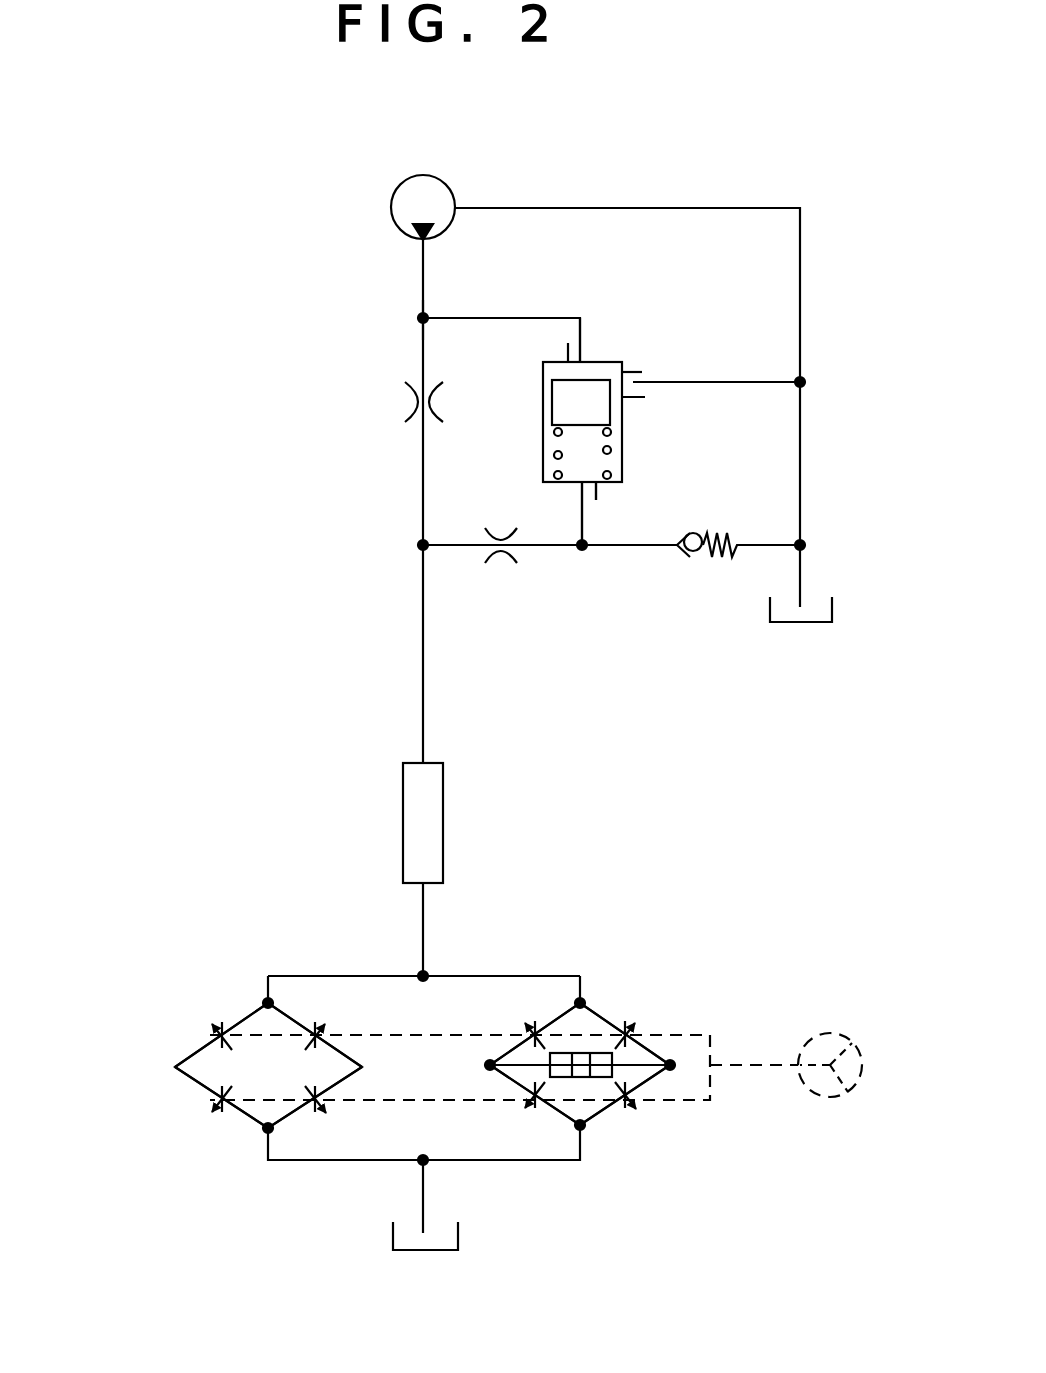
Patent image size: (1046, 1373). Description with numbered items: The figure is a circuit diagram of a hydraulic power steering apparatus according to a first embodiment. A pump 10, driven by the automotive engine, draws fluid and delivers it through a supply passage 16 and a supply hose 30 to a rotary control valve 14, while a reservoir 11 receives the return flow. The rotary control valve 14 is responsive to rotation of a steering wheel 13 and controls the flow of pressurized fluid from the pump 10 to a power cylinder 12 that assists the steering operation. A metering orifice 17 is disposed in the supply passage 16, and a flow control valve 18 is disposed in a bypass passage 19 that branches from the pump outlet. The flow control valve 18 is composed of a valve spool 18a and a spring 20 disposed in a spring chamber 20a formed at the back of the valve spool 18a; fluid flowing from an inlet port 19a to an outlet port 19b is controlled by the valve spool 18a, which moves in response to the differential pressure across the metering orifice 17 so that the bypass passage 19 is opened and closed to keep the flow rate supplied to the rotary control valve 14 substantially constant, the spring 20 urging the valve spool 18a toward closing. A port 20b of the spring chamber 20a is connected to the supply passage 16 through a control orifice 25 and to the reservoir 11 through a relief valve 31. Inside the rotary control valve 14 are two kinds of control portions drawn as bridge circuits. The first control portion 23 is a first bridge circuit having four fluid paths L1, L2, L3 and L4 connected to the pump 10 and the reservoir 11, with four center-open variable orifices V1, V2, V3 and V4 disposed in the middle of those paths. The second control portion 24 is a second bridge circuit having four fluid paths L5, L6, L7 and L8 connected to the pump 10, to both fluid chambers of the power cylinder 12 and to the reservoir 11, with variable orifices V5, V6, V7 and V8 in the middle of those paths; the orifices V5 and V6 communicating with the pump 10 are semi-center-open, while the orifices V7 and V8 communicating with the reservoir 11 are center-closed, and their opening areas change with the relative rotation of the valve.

The pump 10 is at (391, 207).
The reservoir 11 is at (800, 625).
The power cylinder 12 is at (598, 1078).
The steering wheel 13 is at (826, 1035).
The rotary control valve 14 is at (240, 962).
The supply passage 16 is at (423, 342).
The metering orifice 17 is at (408, 402).
The flow control valve 18 is at (540, 392).
The valve spool 18a is at (557, 406).
The bypass passage 19 is at (748, 382).
The inlet port 19a is at (595, 358).
The outlet port 19b is at (634, 372).
The spring 20 is at (611, 452).
The spring chamber 20a is at (590, 490).
The port 20b is at (571, 488).
The first control portion 23 is at (172, 1050).
The second control portion 24 is at (690, 1025).
The control orifice 25 is at (500, 556).
The supply hose 30 is at (420, 824).
The relief valve 31 is at (724, 538).
The fluid path L1 is at (243, 1018).
The fluid path L2 is at (296, 1012).
The fluid path L3 is at (244, 1122).
The fluid path L4 is at (287, 1117).
The fluid path L5 is at (555, 1015).
The fluid path L6 is at (601, 1015).
The fluid path L7 is at (563, 1113).
The fluid path L8 is at (595, 1118).
The variable orifice V1 is at (202, 1031).
The variable orifice V2 is at (337, 1031).
The variable orifice V3 is at (206, 1118).
The variable orifice V4 is at (330, 1118).
The variable orifice V5 is at (511, 1029).
The variable orifice V6 is at (647, 1028).
The variable orifice V7 is at (516, 1116).
The variable orifice V8 is at (642, 1116).